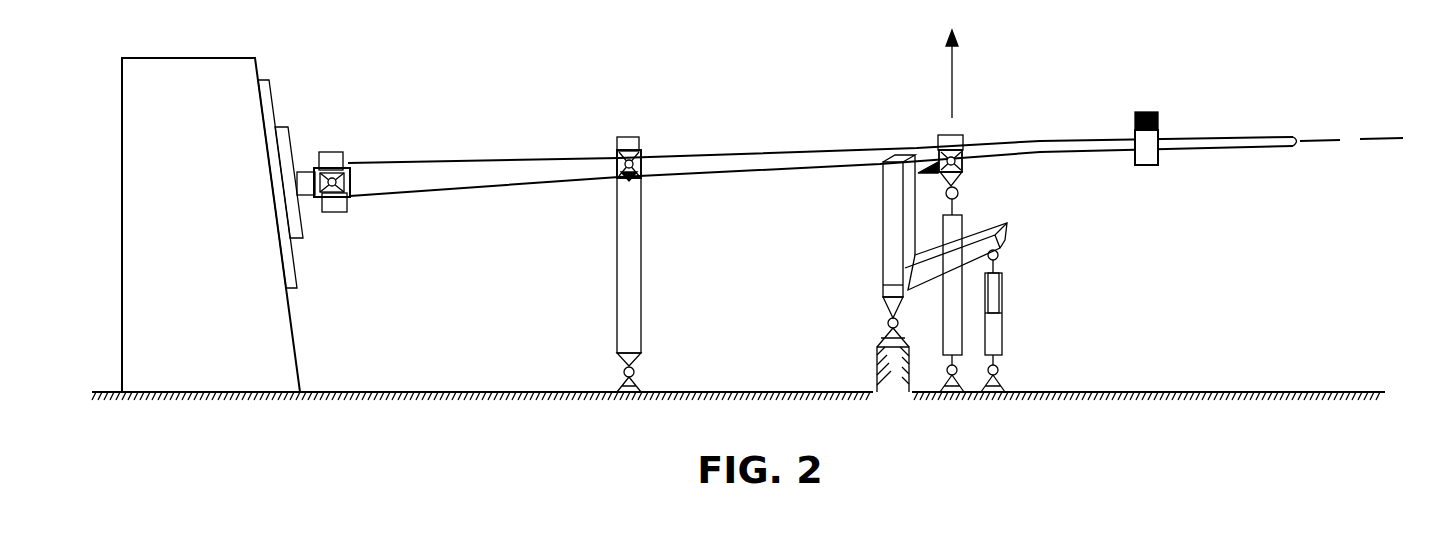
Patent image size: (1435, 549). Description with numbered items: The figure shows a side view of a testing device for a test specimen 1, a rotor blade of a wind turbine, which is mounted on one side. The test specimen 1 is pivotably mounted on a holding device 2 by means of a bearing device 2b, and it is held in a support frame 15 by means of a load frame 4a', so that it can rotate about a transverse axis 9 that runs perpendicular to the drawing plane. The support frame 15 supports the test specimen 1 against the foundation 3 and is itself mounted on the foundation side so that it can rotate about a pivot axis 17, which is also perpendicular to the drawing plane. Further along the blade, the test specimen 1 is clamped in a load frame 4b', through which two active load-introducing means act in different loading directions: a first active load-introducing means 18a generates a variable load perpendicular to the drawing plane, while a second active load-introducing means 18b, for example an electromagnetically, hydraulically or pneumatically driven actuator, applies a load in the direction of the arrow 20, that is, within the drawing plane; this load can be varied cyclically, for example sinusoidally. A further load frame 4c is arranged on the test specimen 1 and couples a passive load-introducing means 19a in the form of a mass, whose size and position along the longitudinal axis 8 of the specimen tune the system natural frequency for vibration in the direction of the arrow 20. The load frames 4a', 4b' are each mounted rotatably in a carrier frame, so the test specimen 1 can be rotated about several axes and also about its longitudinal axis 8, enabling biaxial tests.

The test specimen 1 is at (492, 160).
The holding device 2 is at (122, 113).
The bearing device 2b is at (333, 151).
The foundation 3 is at (394, 392).
The load frame 4a' is at (654, 129).
The load frame 4b' is at (976, 134).
The load frame 4c is at (1162, 130).
The longitudinal axis 8 is at (1385, 137).
The transverse axis 9 is at (620, 162).
The support frame 15 is at (643, 256).
The pivot axis 17 is at (641, 368).
The first active load-introducing means 18a is at (1017, 253).
The second active load-introducing means 18b is at (937, 305).
The passive load-introducing means 19a is at (1145, 112).
The arrow 20 is at (950, 80).